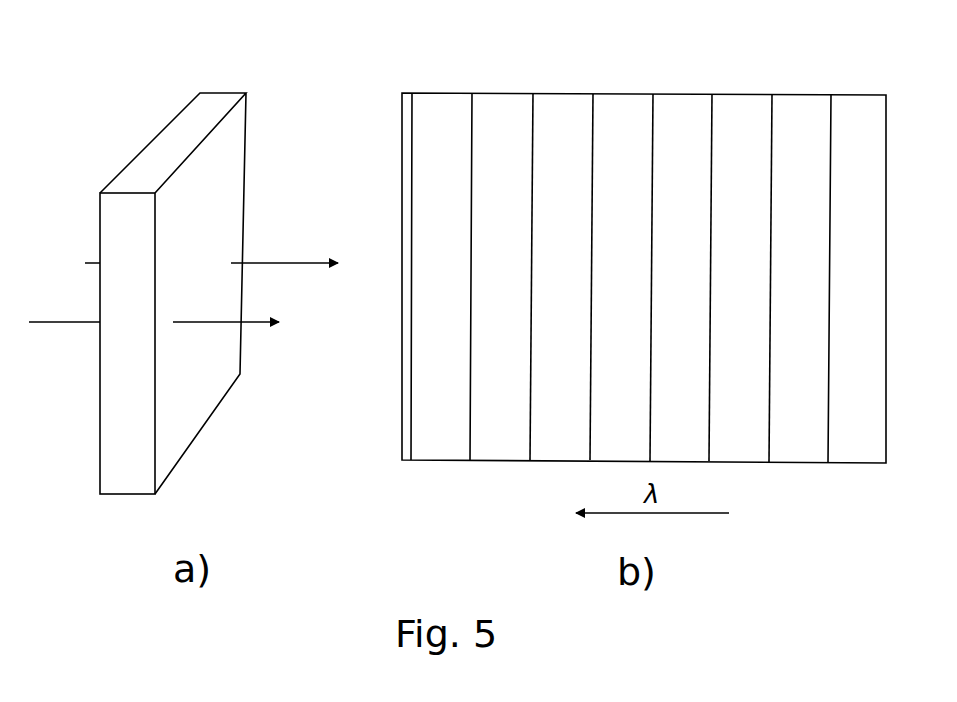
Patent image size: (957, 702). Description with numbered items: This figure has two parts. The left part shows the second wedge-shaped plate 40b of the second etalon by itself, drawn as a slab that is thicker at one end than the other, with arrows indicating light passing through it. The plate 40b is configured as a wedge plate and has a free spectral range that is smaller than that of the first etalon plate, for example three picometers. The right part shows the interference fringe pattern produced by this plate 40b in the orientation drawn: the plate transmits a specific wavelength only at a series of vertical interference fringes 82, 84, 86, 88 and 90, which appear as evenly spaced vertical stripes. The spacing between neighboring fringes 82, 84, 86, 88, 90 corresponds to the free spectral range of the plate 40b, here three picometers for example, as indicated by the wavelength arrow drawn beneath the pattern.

The plate 40b is at (155, 163).
The vertical interference fringe 82 is at (532, 113).
The vertical interference fringe 84 is at (592, 117).
The vertical interference fringe 86 is at (653, 123).
The vertical interference fringe 88 is at (711, 128).
The vertical interference fringe 90 is at (771, 118).